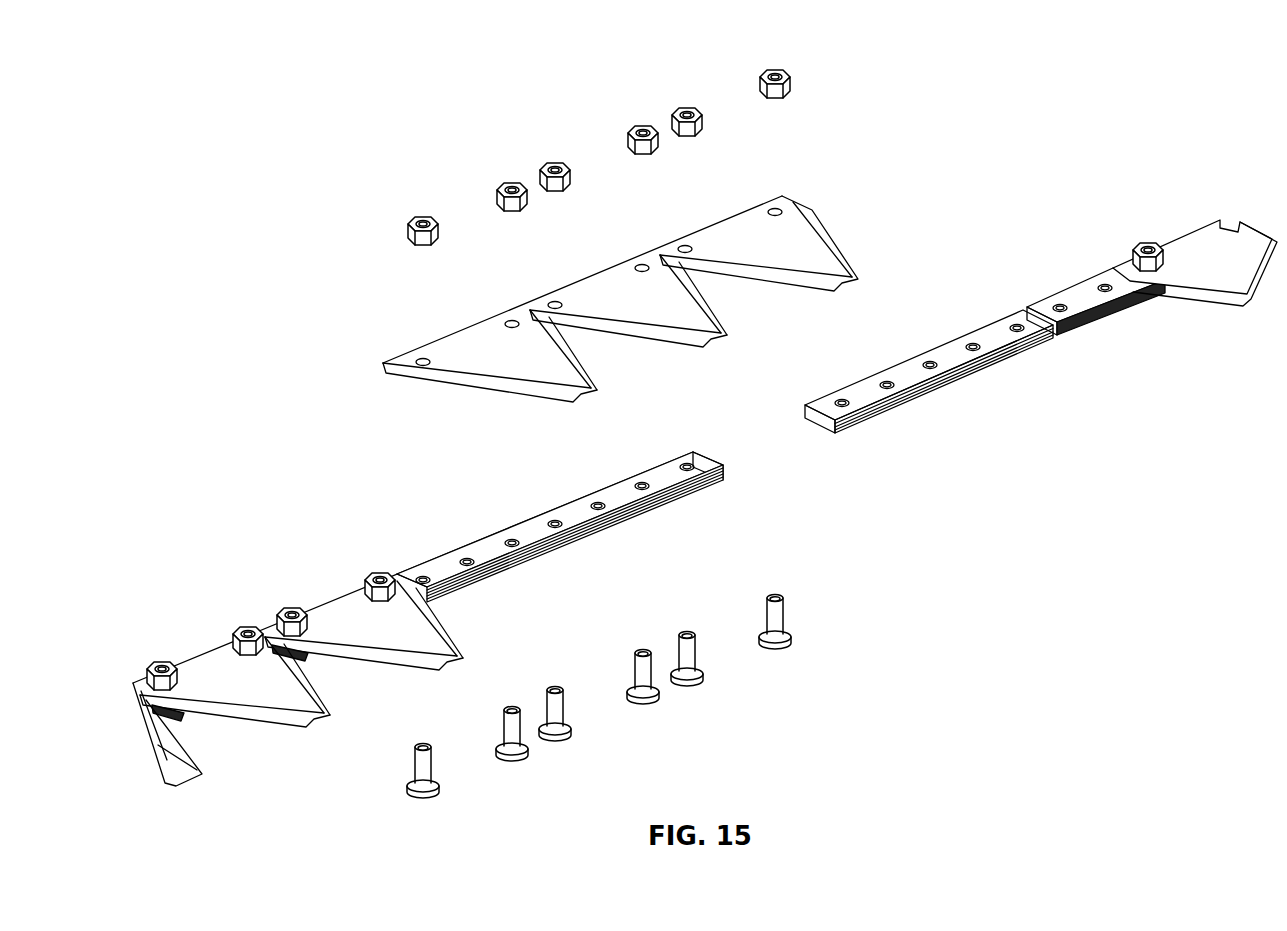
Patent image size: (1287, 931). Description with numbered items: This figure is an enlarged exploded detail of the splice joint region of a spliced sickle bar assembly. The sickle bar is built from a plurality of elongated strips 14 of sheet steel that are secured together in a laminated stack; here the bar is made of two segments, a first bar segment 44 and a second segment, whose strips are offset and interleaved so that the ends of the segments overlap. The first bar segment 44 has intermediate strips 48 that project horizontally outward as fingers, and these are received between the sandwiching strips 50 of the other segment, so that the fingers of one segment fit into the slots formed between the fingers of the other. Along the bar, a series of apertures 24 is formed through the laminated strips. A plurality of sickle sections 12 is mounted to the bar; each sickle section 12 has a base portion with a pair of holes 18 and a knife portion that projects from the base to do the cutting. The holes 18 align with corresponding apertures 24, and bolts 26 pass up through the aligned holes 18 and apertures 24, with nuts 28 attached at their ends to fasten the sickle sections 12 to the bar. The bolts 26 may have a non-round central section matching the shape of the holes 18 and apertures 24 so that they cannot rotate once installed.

The sickle section 12 is at (458, 337).
The elongated strip 14 is at (985, 324).
The hole 18 is at (417, 360).
The aperture 24 is at (842, 396).
The bolt 26 is at (428, 790).
The nut 28 is at (415, 220).
The first bar segment 44 is at (1077, 292).
The intermediate strip 48 is at (942, 356).
The sandwiching strip 50 is at (727, 462).